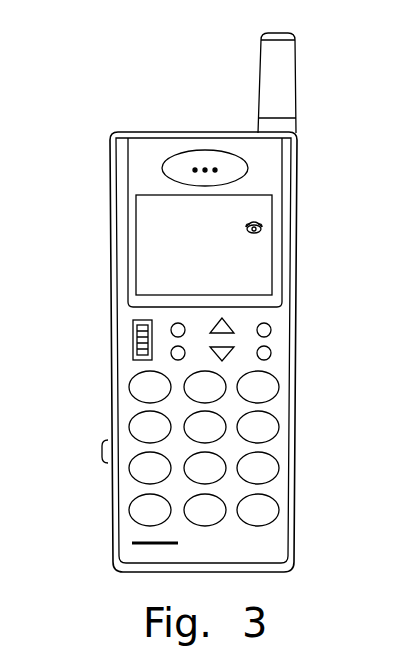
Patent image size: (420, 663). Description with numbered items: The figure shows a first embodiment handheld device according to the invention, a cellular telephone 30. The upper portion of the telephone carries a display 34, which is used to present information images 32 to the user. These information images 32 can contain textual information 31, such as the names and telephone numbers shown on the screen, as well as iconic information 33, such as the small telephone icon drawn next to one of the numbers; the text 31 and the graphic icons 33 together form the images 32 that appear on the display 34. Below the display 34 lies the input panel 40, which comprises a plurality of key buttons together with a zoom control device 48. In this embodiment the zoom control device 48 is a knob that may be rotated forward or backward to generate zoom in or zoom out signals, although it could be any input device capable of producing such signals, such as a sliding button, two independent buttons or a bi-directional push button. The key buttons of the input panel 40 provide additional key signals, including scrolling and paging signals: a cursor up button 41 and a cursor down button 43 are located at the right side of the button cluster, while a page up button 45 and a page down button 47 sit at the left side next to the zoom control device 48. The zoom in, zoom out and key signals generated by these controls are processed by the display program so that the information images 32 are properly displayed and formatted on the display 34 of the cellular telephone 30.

The cellular telephone 30 is at (137, 75).
The textual information 31 is at (212, 215).
The information images 32 is at (140, 213).
The iconic information 33 is at (266, 228).
The display 34 is at (265, 280).
The input panel 40 is at (287, 450).
The cursor up button 41 is at (271, 331).
The cursor down button 43 is at (269, 357).
The page up button 45 is at (172, 327).
The page down button 47 is at (172, 355).
The zoom control device 48 is at (133, 333).